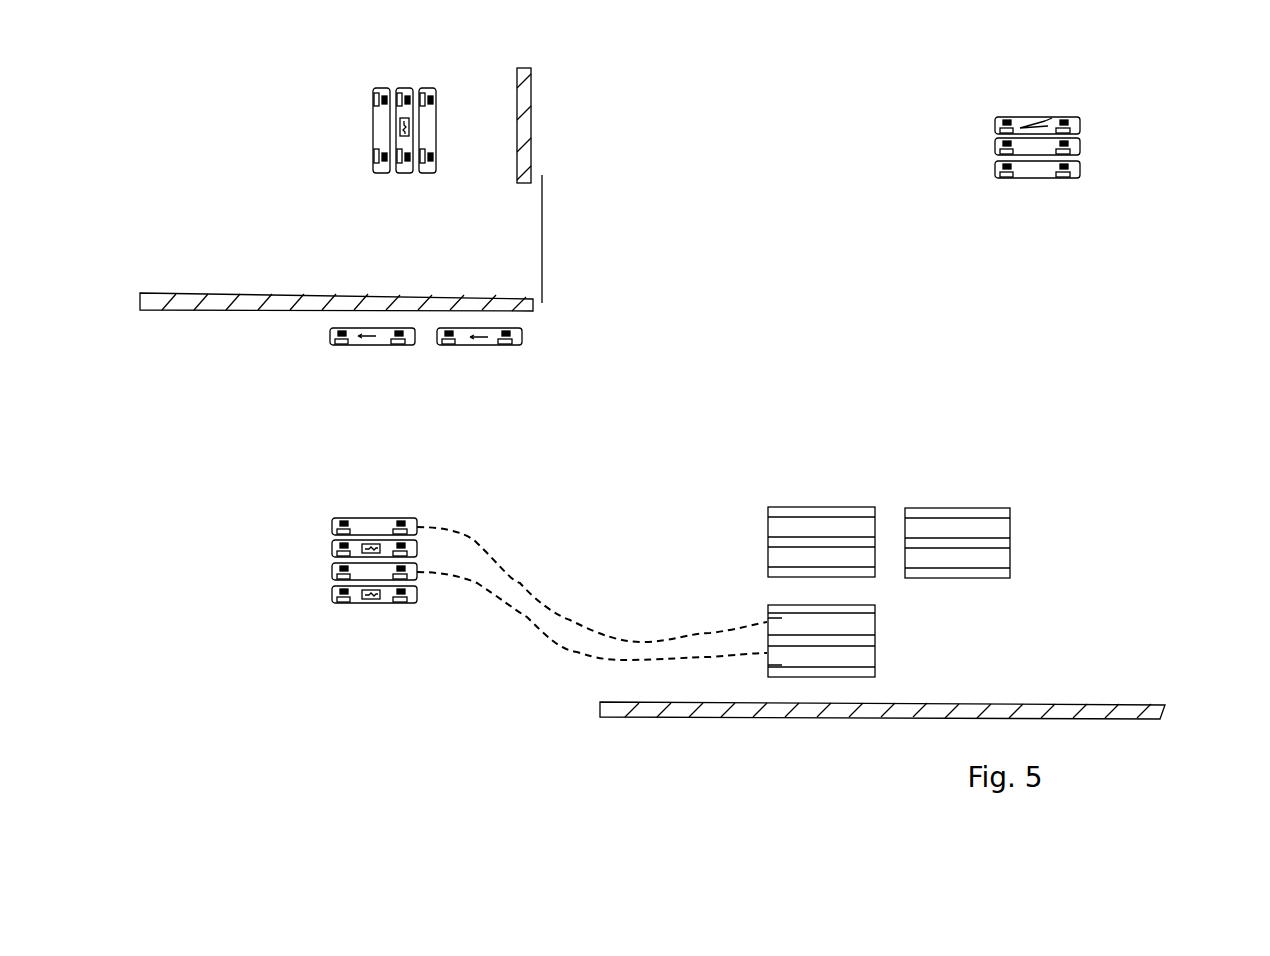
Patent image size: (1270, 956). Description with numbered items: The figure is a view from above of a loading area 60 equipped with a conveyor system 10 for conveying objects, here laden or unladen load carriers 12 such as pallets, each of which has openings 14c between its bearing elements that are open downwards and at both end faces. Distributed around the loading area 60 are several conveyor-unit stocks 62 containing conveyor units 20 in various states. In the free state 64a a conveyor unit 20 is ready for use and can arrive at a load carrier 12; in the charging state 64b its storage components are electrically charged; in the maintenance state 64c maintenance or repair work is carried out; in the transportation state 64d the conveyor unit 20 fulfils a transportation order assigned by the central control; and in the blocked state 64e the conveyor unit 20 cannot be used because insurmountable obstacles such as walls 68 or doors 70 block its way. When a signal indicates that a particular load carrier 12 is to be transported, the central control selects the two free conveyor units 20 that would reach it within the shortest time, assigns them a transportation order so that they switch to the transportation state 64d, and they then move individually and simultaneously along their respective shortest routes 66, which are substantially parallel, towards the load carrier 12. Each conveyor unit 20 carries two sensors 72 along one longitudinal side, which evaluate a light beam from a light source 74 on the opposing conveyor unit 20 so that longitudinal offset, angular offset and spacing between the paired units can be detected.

The conveyor system 10 is at (1153, 155).
The load carrier 12 is at (848, 512).
The opening 14c is at (773, 618).
The conveyor unit 20 is at (644, 342).
The loading area 60 is at (947, 440).
The conveyor-unit stock 62 is at (340, 178).
The free state 64a is at (328, 530).
The charging state 64b is at (328, 555).
The maintenance state 64c is at (990, 125).
The transportation state 64d is at (348, 350).
The blocked state 64e is at (378, 86).
The route 66 is at (490, 547).
The wall 68 is at (531, 80).
The door 70 is at (542, 200).
The sensor 72 is at (436, 98).
The light source 74 is at (375, 98).